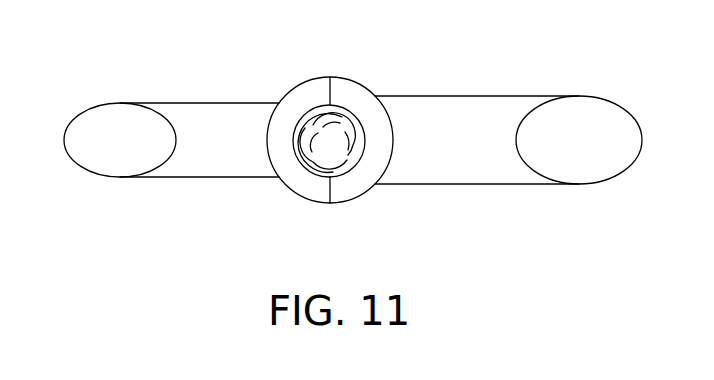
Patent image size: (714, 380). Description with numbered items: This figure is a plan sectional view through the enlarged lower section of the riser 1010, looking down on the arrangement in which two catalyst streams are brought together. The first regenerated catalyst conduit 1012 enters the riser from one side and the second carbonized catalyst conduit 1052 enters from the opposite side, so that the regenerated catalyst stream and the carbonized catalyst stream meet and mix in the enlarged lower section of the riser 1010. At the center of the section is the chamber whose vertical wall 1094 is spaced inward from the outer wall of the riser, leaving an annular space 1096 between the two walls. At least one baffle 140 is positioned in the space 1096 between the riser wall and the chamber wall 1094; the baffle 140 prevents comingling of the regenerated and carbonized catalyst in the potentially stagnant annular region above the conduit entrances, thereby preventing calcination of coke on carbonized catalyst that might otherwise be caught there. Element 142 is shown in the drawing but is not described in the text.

The first regenerated catalyst conduit 1012 is at (210, 112).
The second carbonized catalyst conduit 1052 is at (493, 108).
The riser 1010 is at (292, 194).
The baffle 140 is at (328, 86).
The wall 1094 is at (314, 112).
The space 1096 is at (352, 104).
The iris blades 142 is at (358, 133).